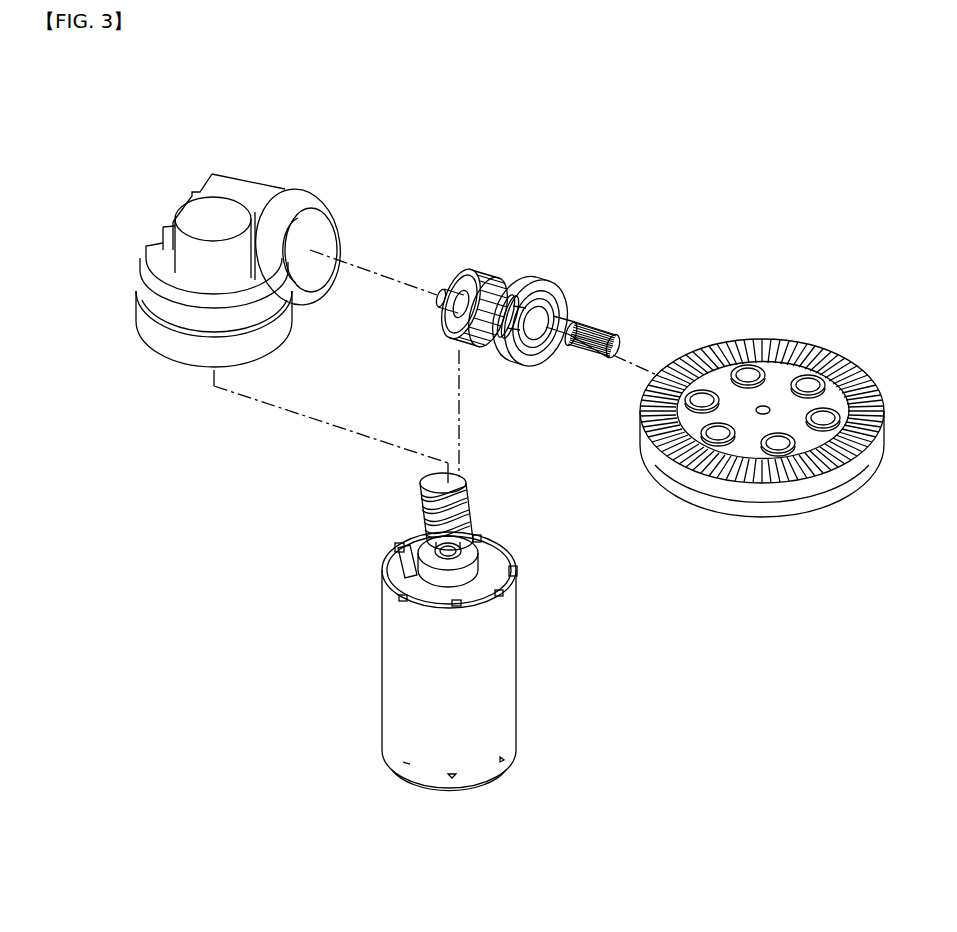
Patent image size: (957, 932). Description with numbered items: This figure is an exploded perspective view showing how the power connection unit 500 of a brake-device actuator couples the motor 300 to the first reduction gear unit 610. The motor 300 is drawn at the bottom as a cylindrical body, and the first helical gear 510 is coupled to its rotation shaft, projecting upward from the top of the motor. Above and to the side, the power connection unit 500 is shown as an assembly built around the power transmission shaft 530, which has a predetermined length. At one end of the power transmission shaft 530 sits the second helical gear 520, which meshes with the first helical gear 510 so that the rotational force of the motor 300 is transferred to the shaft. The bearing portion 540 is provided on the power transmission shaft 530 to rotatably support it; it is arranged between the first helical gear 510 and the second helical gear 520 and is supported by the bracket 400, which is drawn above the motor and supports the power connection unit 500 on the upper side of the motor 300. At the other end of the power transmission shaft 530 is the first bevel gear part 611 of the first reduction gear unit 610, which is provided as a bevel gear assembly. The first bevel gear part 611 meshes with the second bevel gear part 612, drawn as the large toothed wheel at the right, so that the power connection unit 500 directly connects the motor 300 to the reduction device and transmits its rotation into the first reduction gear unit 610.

The motor 300 is at (390, 623).
The bracket 400 is at (252, 140).
The power connection unit 500 is at (459, 240).
The first helical gear 510 is at (425, 510).
The second helical gear 520 is at (468, 272).
The power transmission shaft 530 is at (508, 292).
The bearing portion 540 is at (541, 288).
The first reduction gear unit 610 is at (722, 278).
The first bevel gear part 611 is at (598, 330).
The second bevel gear part 612 is at (724, 334).